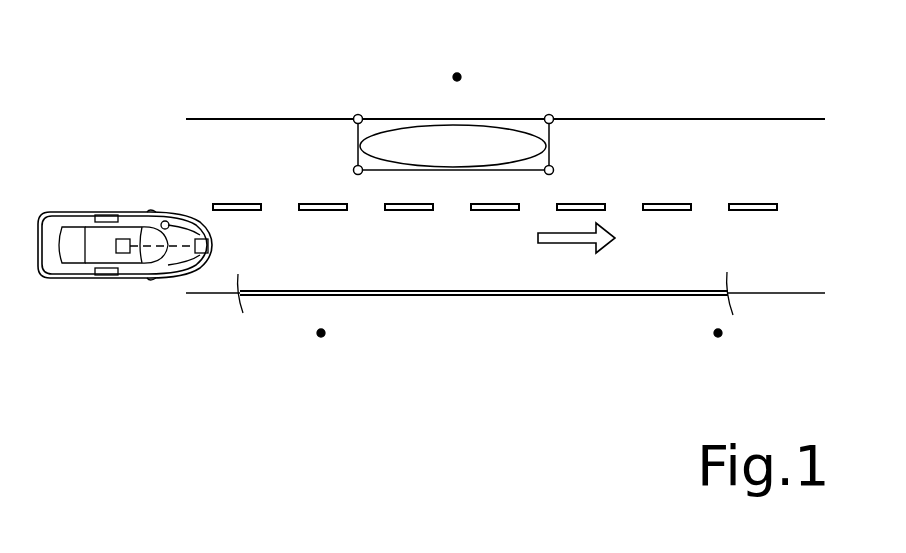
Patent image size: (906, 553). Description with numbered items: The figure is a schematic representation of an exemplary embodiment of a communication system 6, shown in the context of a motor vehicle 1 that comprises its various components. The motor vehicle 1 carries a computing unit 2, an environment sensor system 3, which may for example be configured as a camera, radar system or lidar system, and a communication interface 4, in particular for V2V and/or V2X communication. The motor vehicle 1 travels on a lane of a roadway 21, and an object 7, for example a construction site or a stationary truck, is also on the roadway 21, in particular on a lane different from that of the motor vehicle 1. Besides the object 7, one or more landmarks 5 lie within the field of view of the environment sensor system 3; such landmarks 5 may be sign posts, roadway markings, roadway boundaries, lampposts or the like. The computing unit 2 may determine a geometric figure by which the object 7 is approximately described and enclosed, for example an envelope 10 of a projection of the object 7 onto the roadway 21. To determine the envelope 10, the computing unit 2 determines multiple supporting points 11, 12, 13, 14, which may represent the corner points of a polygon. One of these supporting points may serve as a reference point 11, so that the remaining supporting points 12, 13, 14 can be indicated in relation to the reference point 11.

The motor vehicle 1 is at (125, 233).
The computing unit 2 is at (119, 279).
The environment sensor system 3 is at (191, 279).
The communication interface 4 is at (166, 220).
The landmarks 5 is at (465, 72).
The communication system 6 is at (124, 391).
The object 7 is at (453, 146).
The envelope 10 is at (555, 140).
The reference point 11 is at (353, 164).
The supporting point 12 is at (360, 113).
The supporting point 13 is at (548, 112).
The supporting point 14 is at (556, 168).
The roadway 21 is at (321, 290).